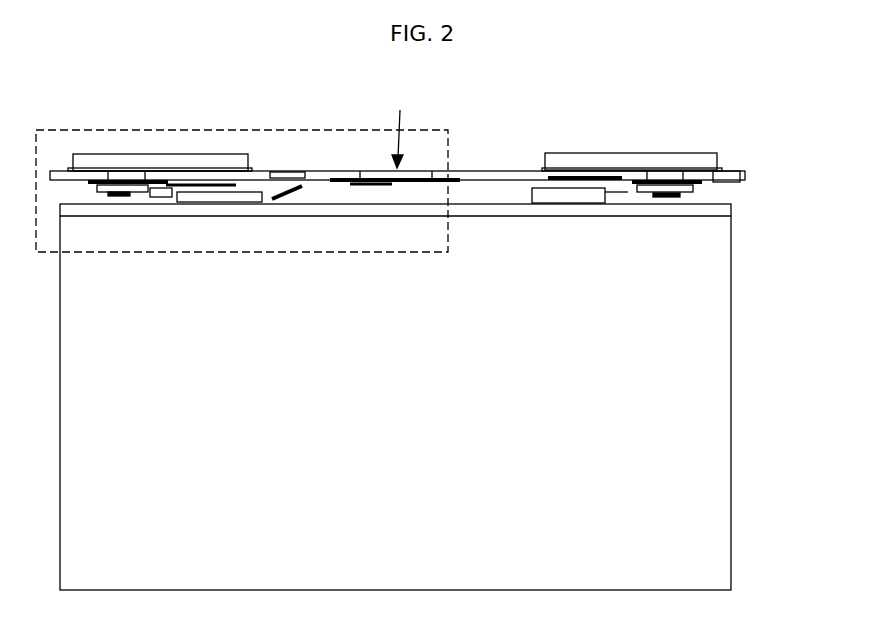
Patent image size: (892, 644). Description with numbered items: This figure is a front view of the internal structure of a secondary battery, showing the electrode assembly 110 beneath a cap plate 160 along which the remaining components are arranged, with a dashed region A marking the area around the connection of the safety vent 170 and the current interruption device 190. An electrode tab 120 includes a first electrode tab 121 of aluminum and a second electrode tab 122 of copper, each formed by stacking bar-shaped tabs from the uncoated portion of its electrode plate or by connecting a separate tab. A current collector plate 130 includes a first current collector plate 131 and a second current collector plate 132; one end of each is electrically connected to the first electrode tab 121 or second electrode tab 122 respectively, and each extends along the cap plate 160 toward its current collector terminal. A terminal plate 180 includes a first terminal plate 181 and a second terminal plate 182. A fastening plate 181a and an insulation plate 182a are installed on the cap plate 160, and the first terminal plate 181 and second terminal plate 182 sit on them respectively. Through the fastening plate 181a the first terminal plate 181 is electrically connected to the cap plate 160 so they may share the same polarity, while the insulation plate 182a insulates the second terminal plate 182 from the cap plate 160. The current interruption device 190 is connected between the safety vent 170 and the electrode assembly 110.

The electrode assembly 110 is at (722, 426).
The electrode tab 120 is at (389, 265).
The first electrode tab 121 is at (245, 198).
The second electrode tab 122 is at (560, 240).
The current collector plate 130 is at (394, 342).
The first current collector plate 131 is at (128, 197).
The second current collector plate 132 is at (616, 318).
The cap plate 160 is at (485, 170).
The safety vent 170 is at (399, 129).
The terminal plate 180 is at (395, 288).
The first terminal plate 181 is at (176, 163).
The fastening plate 181a is at (260, 168).
The second terminal plate 182 is at (604, 264).
The insulation plate 182a is at (537, 170).
The current interruption device 190 is at (298, 198).
The enlarged region A is at (62, 128).